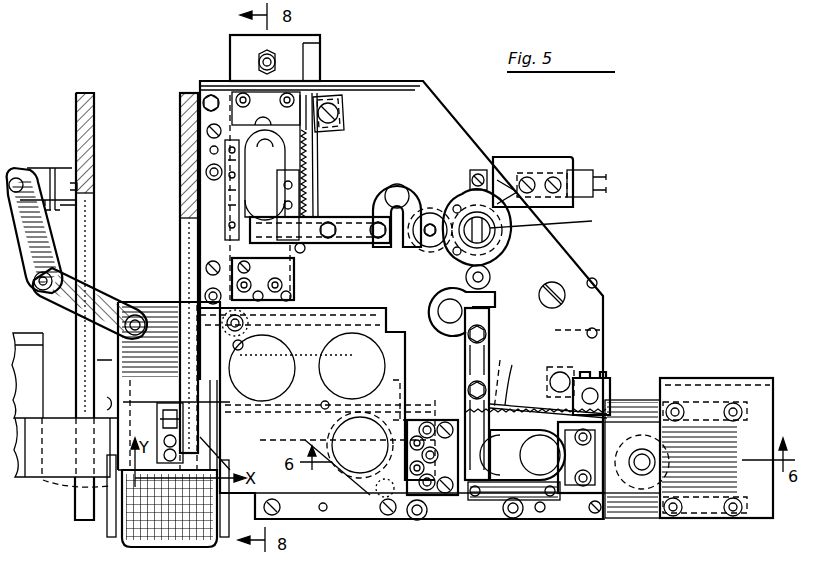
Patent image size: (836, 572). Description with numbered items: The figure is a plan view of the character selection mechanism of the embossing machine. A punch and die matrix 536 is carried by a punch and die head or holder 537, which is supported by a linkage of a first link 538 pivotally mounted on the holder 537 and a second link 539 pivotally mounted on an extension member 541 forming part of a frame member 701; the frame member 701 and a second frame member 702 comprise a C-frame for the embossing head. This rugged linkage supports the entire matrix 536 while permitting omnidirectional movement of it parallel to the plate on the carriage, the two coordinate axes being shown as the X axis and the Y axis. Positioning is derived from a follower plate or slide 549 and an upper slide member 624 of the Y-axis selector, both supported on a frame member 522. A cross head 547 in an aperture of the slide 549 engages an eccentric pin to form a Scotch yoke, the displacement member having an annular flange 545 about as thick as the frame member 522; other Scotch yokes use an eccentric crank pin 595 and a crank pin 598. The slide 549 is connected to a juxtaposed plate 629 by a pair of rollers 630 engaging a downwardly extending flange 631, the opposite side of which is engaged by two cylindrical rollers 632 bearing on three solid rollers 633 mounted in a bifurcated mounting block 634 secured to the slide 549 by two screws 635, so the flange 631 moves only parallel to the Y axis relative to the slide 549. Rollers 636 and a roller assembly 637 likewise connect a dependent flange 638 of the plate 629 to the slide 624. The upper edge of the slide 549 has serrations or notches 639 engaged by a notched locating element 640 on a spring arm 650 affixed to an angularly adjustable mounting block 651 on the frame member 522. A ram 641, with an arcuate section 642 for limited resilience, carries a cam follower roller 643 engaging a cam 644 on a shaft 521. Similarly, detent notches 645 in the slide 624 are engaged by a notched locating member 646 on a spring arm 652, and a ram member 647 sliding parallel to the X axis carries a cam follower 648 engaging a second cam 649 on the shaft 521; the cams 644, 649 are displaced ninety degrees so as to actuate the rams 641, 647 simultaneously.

The frame member 701 is at (86, 93).
The second frame member 702 is at (182, 93).
The extension member 541 is at (45, 178).
The second link 539 is at (34, 232).
The first link 538 is at (102, 297).
The punch and die head or holder 537 is at (157, 303).
The punch and die matrix 536 is at (134, 548).
The frame member 522 is at (398, 84).
The spring arm 652 is at (318, 158).
The detent or guide notches 645 is at (312, 182).
The notched locating member 646 is at (302, 228).
The ram member 647 is at (373, 200).
The cam follower 648 is at (432, 210).
The second cam 649 is at (494, 166).
The shaft 521 is at (557, 226).
The cam 644 is at (508, 240).
The cam follower roller 643 is at (489, 276).
The arcuate section 642 is at (448, 298).
The ram 641 is at (488, 345).
The locating element 640 is at (536, 377).
The serrations or notches 639 is at (527, 378).
The spring arm 650 is at (535, 410).
The angularly adjustable mounting block 651 is at (588, 388).
The upper slide member 624 is at (302, 250).
The roller assembly 637 is at (263, 279).
The dependent flange 638 is at (328, 323).
The rollers 636 is at (307, 367).
The plate 629 is at (400, 358).
The downwardly extending flange 631 is at (410, 380).
The screws 635 is at (441, 420).
The solid rollers 633 is at (435, 433).
The bifurcated mounting block 634 is at (435, 463).
The rollers 630 is at (384, 422).
The cylindrical rollers 632 is at (415, 442).
The follower plate or slide 549 is at (535, 461).
The crank pin 598 is at (381, 571).
The eccentric crank pin 595 is at (490, 545).
The annular flange 545 is at (540, 545).
The cross head 547 is at (566, 571).